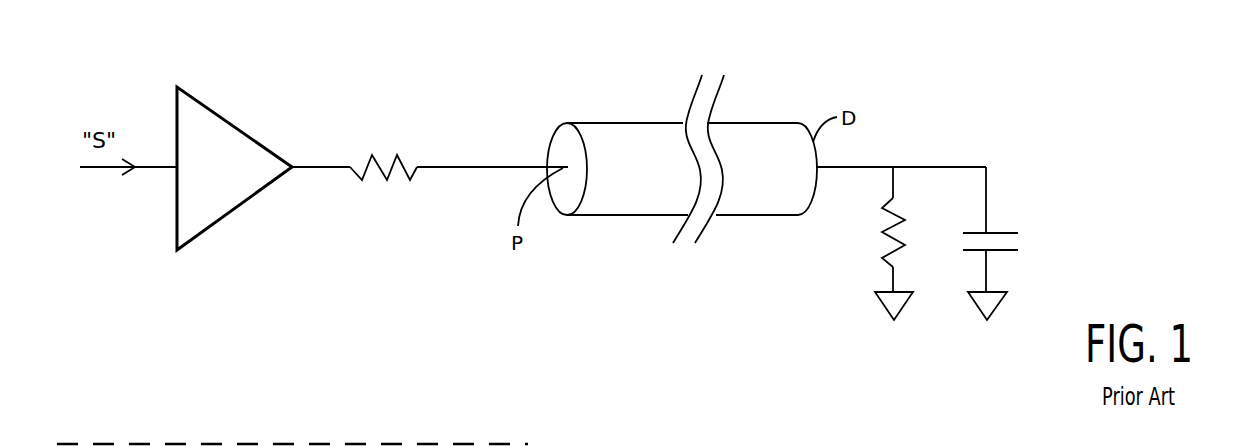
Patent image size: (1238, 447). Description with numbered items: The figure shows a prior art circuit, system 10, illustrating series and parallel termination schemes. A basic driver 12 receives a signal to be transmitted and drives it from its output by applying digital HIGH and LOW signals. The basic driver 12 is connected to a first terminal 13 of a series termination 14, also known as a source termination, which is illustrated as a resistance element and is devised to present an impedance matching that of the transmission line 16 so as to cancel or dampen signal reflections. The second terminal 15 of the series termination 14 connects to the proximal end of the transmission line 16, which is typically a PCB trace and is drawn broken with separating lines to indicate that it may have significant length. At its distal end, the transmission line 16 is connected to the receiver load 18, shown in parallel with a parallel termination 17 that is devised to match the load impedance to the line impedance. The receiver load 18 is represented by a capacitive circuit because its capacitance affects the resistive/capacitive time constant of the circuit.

The system 10 is at (977, 97).
The basic driver 12 is at (221, 152).
The first terminal 13 is at (326, 170).
The series termination 14 is at (378, 158).
The second terminal 15 is at (458, 167).
The transmission line 16 is at (613, 142).
The parallel termination 17 is at (885, 232).
The receiver load 18 is at (1008, 232).